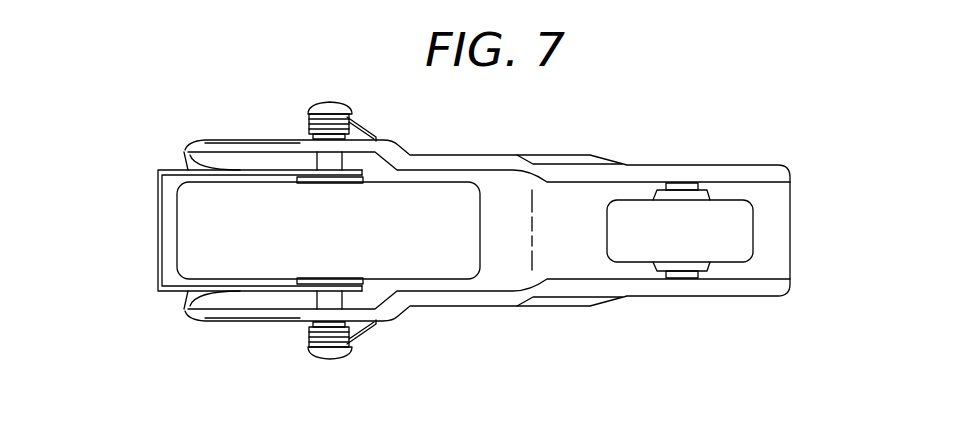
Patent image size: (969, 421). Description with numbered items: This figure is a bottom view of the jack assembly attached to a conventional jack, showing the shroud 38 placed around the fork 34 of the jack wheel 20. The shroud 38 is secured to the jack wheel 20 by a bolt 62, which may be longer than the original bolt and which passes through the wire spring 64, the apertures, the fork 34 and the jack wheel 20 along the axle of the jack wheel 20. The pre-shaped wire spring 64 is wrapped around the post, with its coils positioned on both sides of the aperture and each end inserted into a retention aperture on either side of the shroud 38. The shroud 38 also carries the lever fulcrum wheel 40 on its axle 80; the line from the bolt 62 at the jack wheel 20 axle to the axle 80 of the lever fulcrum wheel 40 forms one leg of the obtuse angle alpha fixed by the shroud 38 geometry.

The jack wheel 20 is at (397, 247).
The fork 34 is at (168, 222).
The shroud 38 is at (566, 156).
The lever fulcrum wheel 40 is at (732, 229).
The bolt 62 is at (325, 103).
The wire spring 64 is at (293, 133).
The axle 80 is at (680, 273).